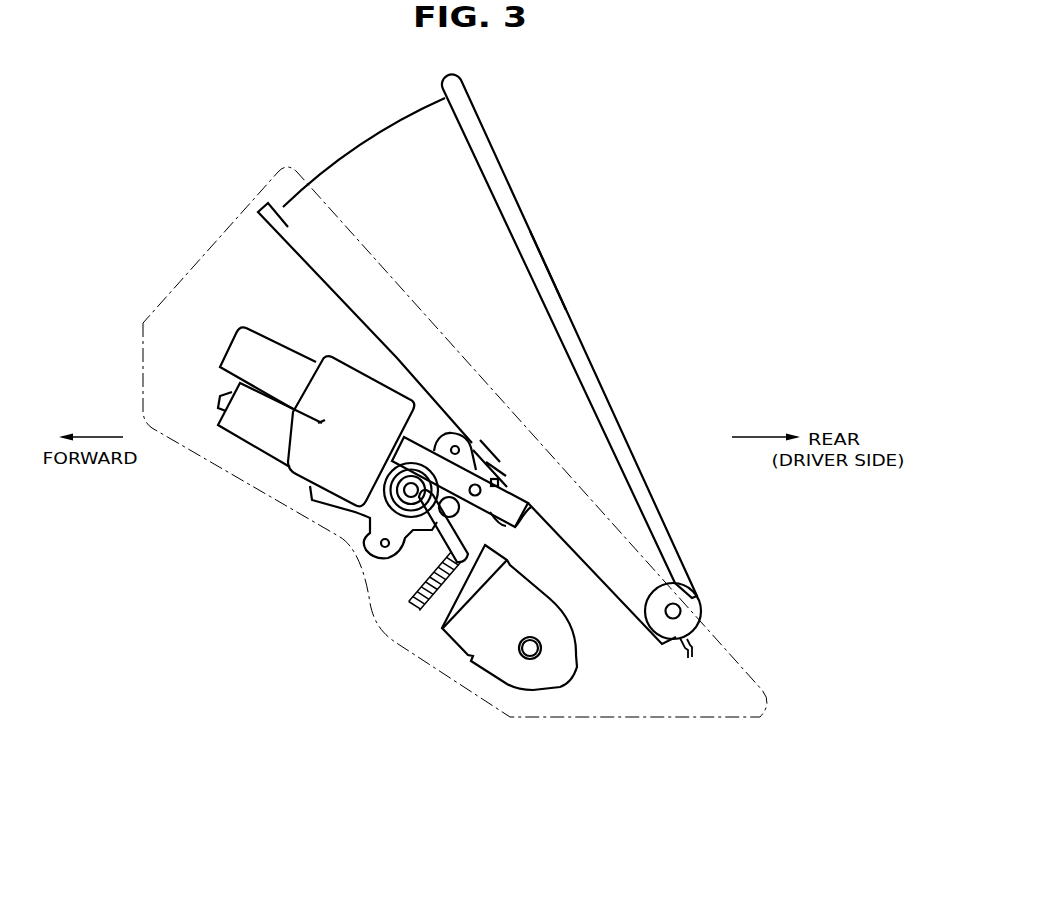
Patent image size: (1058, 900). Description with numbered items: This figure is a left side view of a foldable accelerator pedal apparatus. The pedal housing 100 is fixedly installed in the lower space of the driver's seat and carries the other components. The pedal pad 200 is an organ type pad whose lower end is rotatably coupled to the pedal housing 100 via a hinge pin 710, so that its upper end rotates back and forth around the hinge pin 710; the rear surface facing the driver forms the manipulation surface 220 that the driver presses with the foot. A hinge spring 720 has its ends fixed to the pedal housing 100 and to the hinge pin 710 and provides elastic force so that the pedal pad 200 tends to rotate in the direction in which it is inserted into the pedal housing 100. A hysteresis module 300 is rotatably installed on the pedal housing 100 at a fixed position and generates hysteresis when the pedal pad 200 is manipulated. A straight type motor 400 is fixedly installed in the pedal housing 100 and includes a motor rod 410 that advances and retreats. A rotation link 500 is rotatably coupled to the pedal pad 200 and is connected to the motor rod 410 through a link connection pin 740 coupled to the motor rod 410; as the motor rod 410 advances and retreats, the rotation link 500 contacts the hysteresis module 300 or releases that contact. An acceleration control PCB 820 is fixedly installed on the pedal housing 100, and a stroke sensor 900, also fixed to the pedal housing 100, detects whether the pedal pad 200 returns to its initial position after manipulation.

The pedal housing 100 is at (617, 718).
The pedal pad 200 is at (518, 188).
The manipulation surface 220 is at (547, 260).
The hysteresis module 300 is at (463, 542).
The straight type motor 400 is at (253, 362).
The motor rod 410 is at (498, 508).
The rotation link 500 is at (478, 470).
The hinge pin 710 is at (680, 611).
The hinge spring 720 is at (690, 650).
The link connection pin 740 is at (505, 480).
The acceleration control PCB 820 is at (523, 677).
The stroke sensor 900 is at (377, 522).